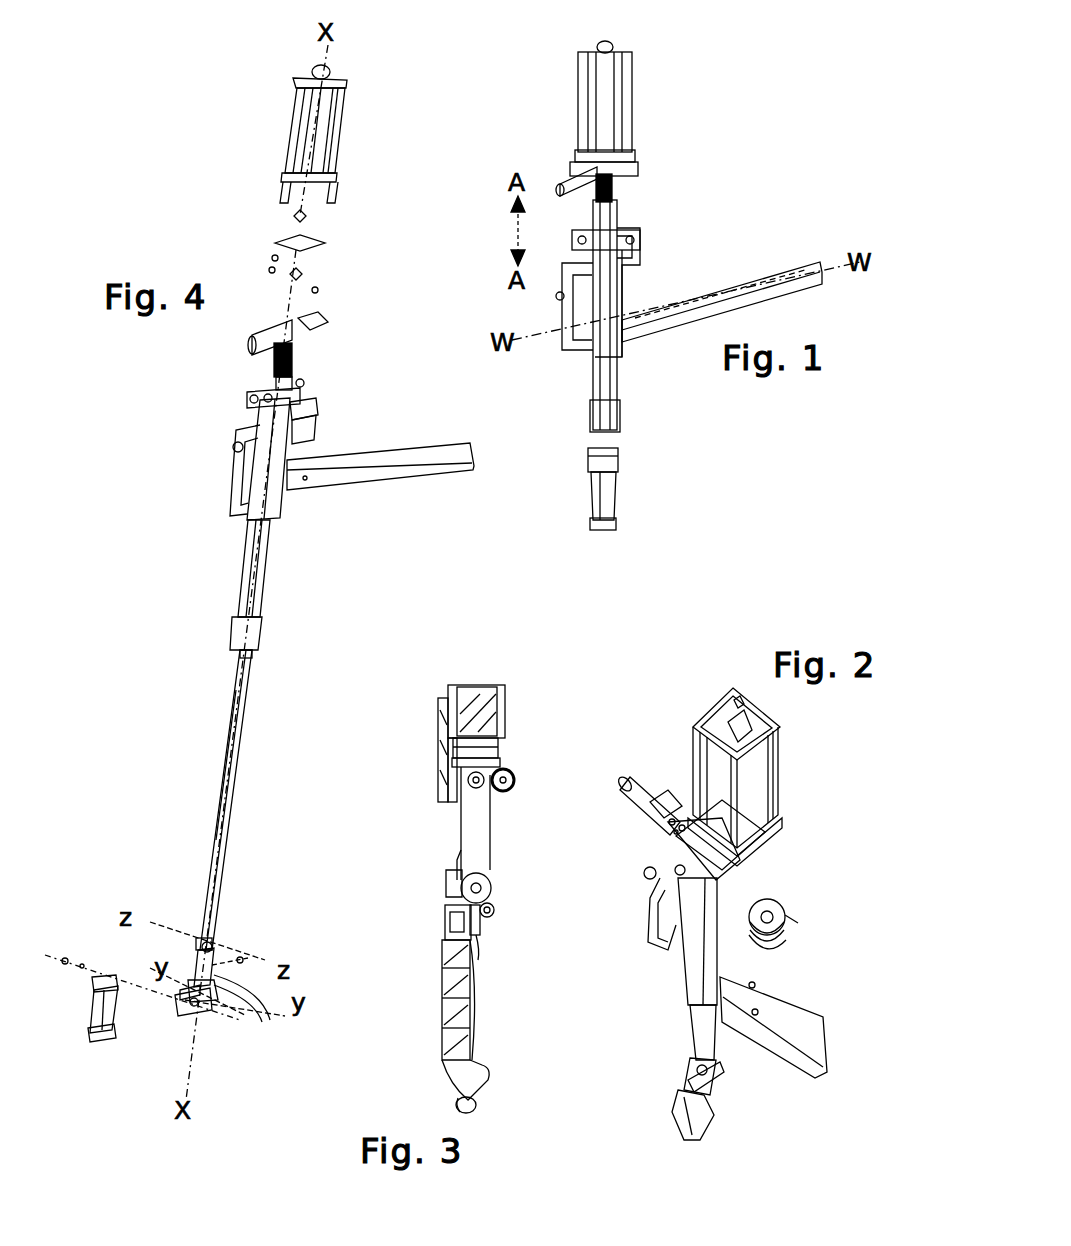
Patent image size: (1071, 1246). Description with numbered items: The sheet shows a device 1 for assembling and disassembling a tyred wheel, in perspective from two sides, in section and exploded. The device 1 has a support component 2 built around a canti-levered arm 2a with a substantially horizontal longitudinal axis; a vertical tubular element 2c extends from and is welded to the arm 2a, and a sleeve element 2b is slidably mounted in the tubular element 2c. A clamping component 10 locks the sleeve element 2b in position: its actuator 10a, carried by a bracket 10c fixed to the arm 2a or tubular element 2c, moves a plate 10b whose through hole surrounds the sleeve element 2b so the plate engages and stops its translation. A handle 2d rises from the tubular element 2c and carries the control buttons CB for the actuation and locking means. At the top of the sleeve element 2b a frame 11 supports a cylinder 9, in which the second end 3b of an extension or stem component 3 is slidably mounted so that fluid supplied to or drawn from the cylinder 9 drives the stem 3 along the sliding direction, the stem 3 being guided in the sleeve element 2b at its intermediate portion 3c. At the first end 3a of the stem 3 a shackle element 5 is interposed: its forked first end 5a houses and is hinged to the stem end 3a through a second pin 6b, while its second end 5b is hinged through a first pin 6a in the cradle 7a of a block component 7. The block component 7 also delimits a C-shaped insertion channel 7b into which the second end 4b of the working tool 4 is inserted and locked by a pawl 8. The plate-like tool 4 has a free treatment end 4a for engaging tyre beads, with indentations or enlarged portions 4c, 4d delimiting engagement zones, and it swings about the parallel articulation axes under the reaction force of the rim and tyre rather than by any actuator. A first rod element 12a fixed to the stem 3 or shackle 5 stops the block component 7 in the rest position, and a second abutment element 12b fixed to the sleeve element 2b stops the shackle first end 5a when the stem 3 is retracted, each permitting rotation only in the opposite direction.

In FIG. 1, the device 1 is at (688, 200).
In FIG. 1, the support component 2 is at (752, 268).
In FIG. 4, the support component 2 is at (372, 452).
In FIG. 1, the canti-levered arm 2a is at (694, 278).
In FIG. 4, the canti-levered arm 2a is at (382, 450).
In FIG. 2, the canti-levered arm 2a is at (805, 1002).
In FIG. 1, the sleeve element 2b is at (592, 383).
In FIG. 4, the sleeve element 2b is at (246, 570).
In FIG. 3, the sleeve element 2b is at (438, 724).
In FIG. 2, the sleeve element 2b is at (690, 1018).
In FIG. 1, the tubular element 2c is at (622, 340).
In FIG. 4, the tubular element 2c is at (285, 505).
In FIG. 2, the tubular element 2c is at (680, 968).
In FIG. 1, the handle 2d is at (574, 306).
In FIG. 4, the handle 2d is at (230, 486).
In FIG. 2, the handle 2d is at (648, 918).
In FIG. 4, the extension or stem component 3 is at (243, 760).
In FIG. 3, the extension or stem component 3 is at (504, 694).
In FIG. 4, the first end 3a is at (214, 942).
In FIG. 3, the first end 3a is at (500, 752).
In FIG. 4, the second end 3b is at (250, 655).
In FIG. 4, the intermediate portion 3c is at (222, 798).
In FIG. 1, the working tool 4 is at (617, 492).
In FIG. 4, the working tool 4 is at (94, 1004).
In FIG. 3, the working tool 4 is at (468, 1020).
In FIG. 2, the working tool 4 is at (672, 1125).
In FIG. 1, the treatment end 4a is at (596, 530).
In FIG. 4, the treatment end 4a is at (112, 1034).
In FIG. 3, the treatment end 4a is at (478, 1104).
In FIG. 4, the second end 4b is at (105, 975).
In FIG. 3, the second end 4b is at (478, 928).
In FIG. 3, the indentation or enlarged portion 4c is at (458, 1106).
In FIG. 3, the indentation or enlarged portion 4d is at (486, 1072).
In FIG. 1, the shackle element 5 is at (610, 442).
In FIG. 4, the shackle element 5 is at (200, 966).
In FIG. 3, the shackle element 5 is at (470, 828).
In FIG. 2, the shackle element 5 is at (686, 1072).
In FIG. 4, the first end of the shackle element 5a is at (200, 938).
In FIG. 3, the first end of the shackle element 5a is at (460, 784).
In FIG. 4, the second end of the shackle element 5b is at (214, 1000).
In FIG. 3, the second end of the shackle element 5b is at (462, 884).
In FIG. 4, the first pin 6a is at (262, 1022).
In FIG. 3, the first pin 6a is at (485, 874).
In FIG. 4, the second pin 6b is at (248, 958).
In FIG. 3, the second pin 6b is at (484, 790).
In FIG. 4, the block component 7 is at (194, 1016).
In FIG. 3, the block component 7 is at (480, 948).
In FIG. 4, the cradle 7a is at (182, 992).
In FIG. 3, the insertion channel 7b is at (445, 925).
In FIG. 4, the pawl 8 is at (65, 958).
In FIG. 1, the cylinder 9 is at (628, 105).
In FIG. 4, the cylinder 9 is at (338, 140).
In FIG. 2, the cylinder 9 is at (755, 785).
In FIG. 4, the clamping component 10 is at (306, 392).
In FIG. 4, the actuator 10a is at (317, 404).
In FIG. 2, the actuator 10a is at (782, 950).
In FIG. 4, the plate 10b is at (302, 379).
In FIG. 2, the plate 10b is at (767, 908).
In FIG. 4, the bracket 10c is at (300, 428).
In FIG. 4, the frame 11 is at (296, 320).
In FIG. 3, the first rod element 12a is at (496, 904).
In FIG. 2, the first rod element 12a is at (712, 1088).
In FIG. 3, the second abutment element 12b is at (511, 780).
In FIG. 2, the second abutment element 12b is at (710, 1068).
In FIG. 4, the control means or buttons CB is at (232, 446).
In FIG. 2, the control means or buttons CB is at (644, 875).